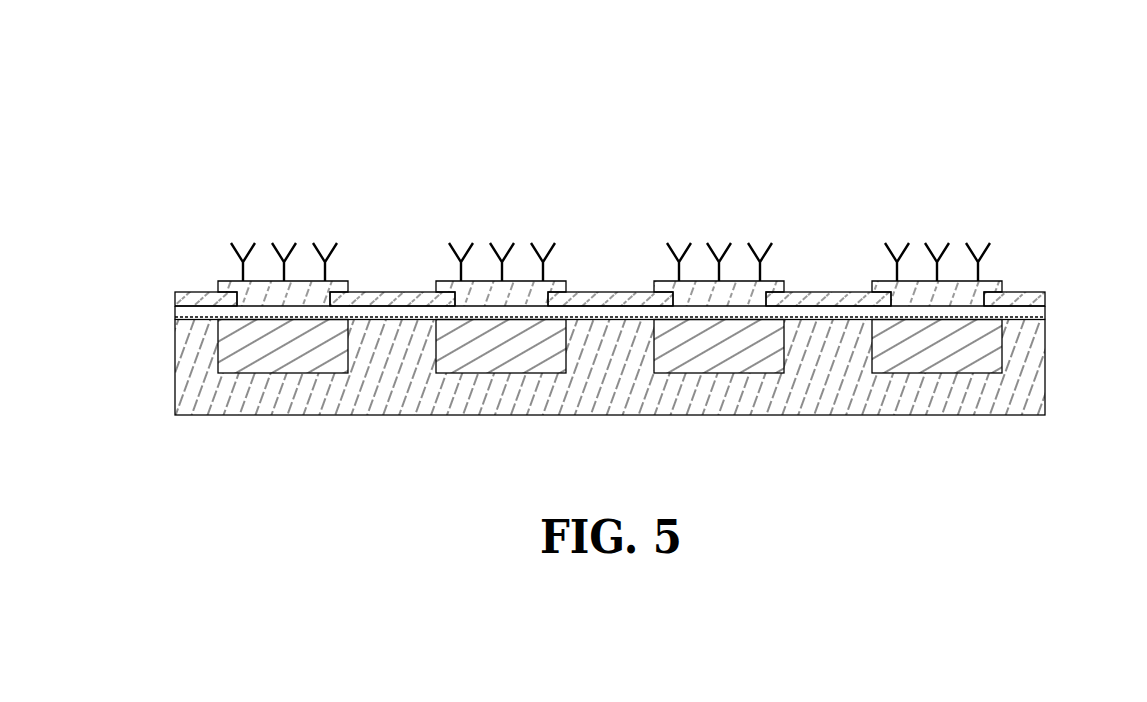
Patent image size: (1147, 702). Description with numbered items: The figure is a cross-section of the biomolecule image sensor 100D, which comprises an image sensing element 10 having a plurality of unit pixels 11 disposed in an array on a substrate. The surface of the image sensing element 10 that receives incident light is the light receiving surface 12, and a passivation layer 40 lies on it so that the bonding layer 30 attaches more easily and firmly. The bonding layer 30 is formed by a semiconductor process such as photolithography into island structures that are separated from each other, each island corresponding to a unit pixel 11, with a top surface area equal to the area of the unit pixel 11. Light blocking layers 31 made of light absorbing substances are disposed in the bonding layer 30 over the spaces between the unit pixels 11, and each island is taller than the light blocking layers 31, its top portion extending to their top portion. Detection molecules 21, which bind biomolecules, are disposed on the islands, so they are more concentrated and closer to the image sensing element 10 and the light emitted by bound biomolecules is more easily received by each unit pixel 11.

The biomolecule image sensor 100D is at (150, 122).
The image sensing element 10 is at (1030, 395).
The unit pixel 11 is at (990, 340).
The light receiving surface 12 is at (342, 317).
The detection molecule 21 is at (541, 250).
The bonding layer 30 is at (228, 281).
The light blocking layer 31 is at (1030, 300).
The passivation layer 40 is at (190, 313).